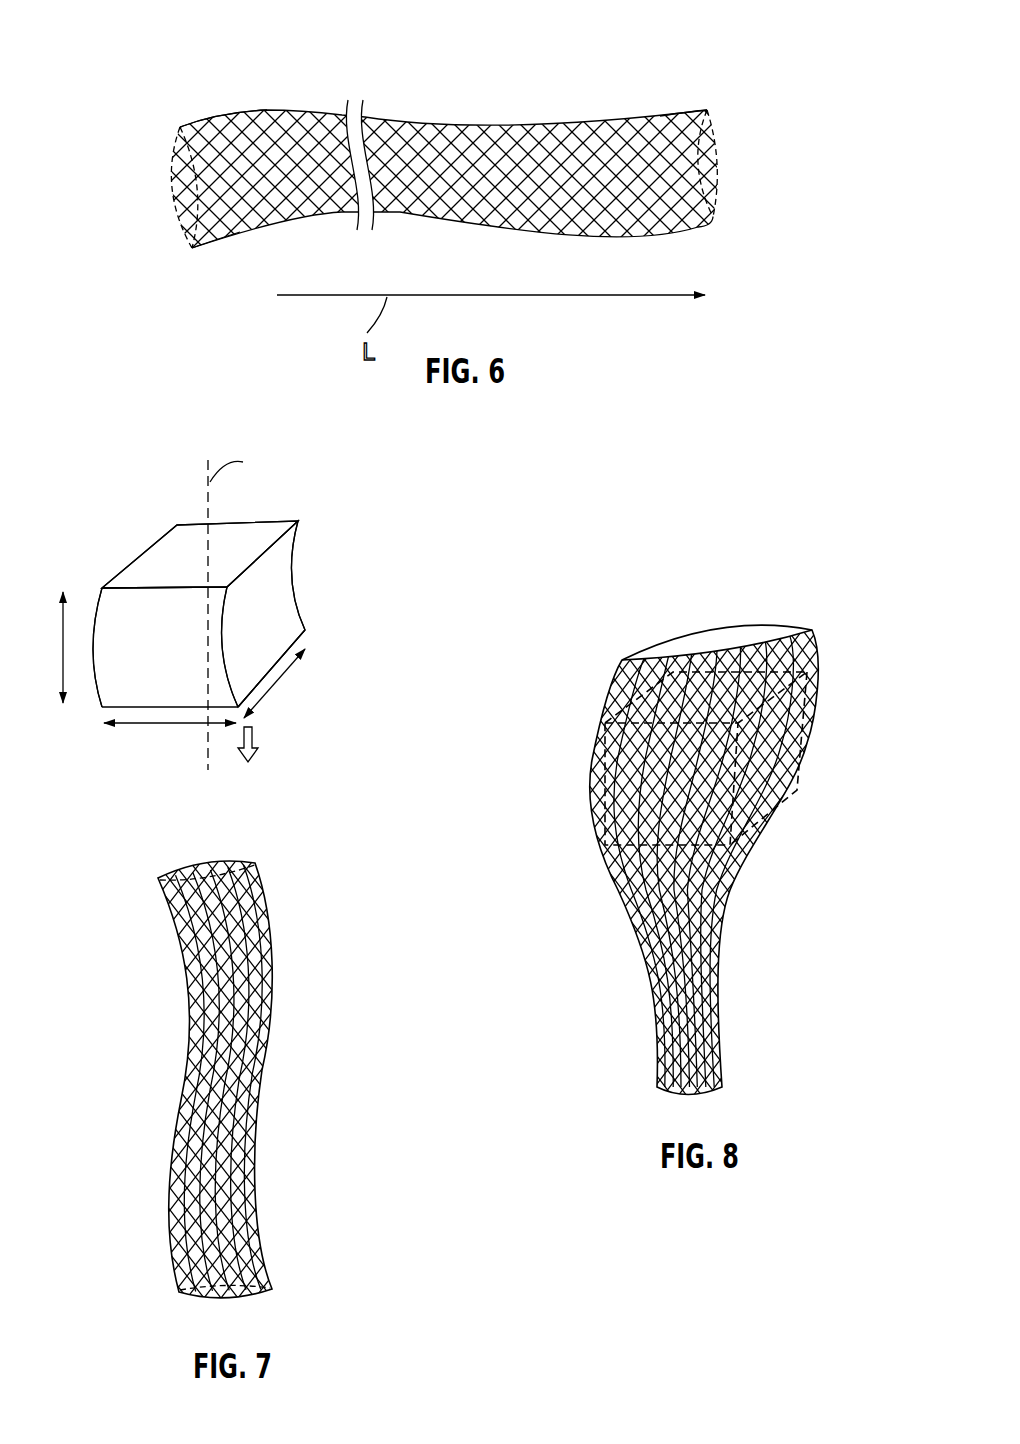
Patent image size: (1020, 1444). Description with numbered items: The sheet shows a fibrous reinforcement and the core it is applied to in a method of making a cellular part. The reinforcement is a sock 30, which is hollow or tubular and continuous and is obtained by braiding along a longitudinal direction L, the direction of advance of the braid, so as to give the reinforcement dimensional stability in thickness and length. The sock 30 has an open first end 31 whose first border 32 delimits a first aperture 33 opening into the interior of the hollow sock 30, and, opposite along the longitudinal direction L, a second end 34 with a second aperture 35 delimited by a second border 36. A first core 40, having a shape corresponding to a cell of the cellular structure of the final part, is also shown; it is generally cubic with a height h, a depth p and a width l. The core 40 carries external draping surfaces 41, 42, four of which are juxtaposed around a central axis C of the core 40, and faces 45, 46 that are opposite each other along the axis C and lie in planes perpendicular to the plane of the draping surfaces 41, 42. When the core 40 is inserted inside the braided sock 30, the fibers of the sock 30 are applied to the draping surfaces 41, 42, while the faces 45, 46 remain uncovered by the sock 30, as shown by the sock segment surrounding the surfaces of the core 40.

In FIG. 6, the sock 30 is at (160, 38).
In FIG. 7, the sock 30 is at (148, 1104).
In FIG. 8, the sock 30 is at (778, 771).
In FIG. 6, the first end 31 is at (691, 112).
In FIG. 6, the first border 32 is at (704, 108).
In FIG. 6, the first aperture 33 is at (716, 162).
In FIG. 6, the second end 34 is at (212, 123).
In FIG. 6, the second aperture 35 is at (174, 151).
In FIG. 6, the second border 36 is at (195, 249).
In FIG. 7, the first core 40 is at (360, 621).
In FIG. 8, the first core 40 is at (806, 687).
In FIG. 7, the draping surface 41 is at (270, 584).
In FIG. 7, the draping surface 42 is at (111, 679).
In FIG. 7, the face 45 is at (172, 556).
In FIG. 7, the face 46 is at (310, 642).